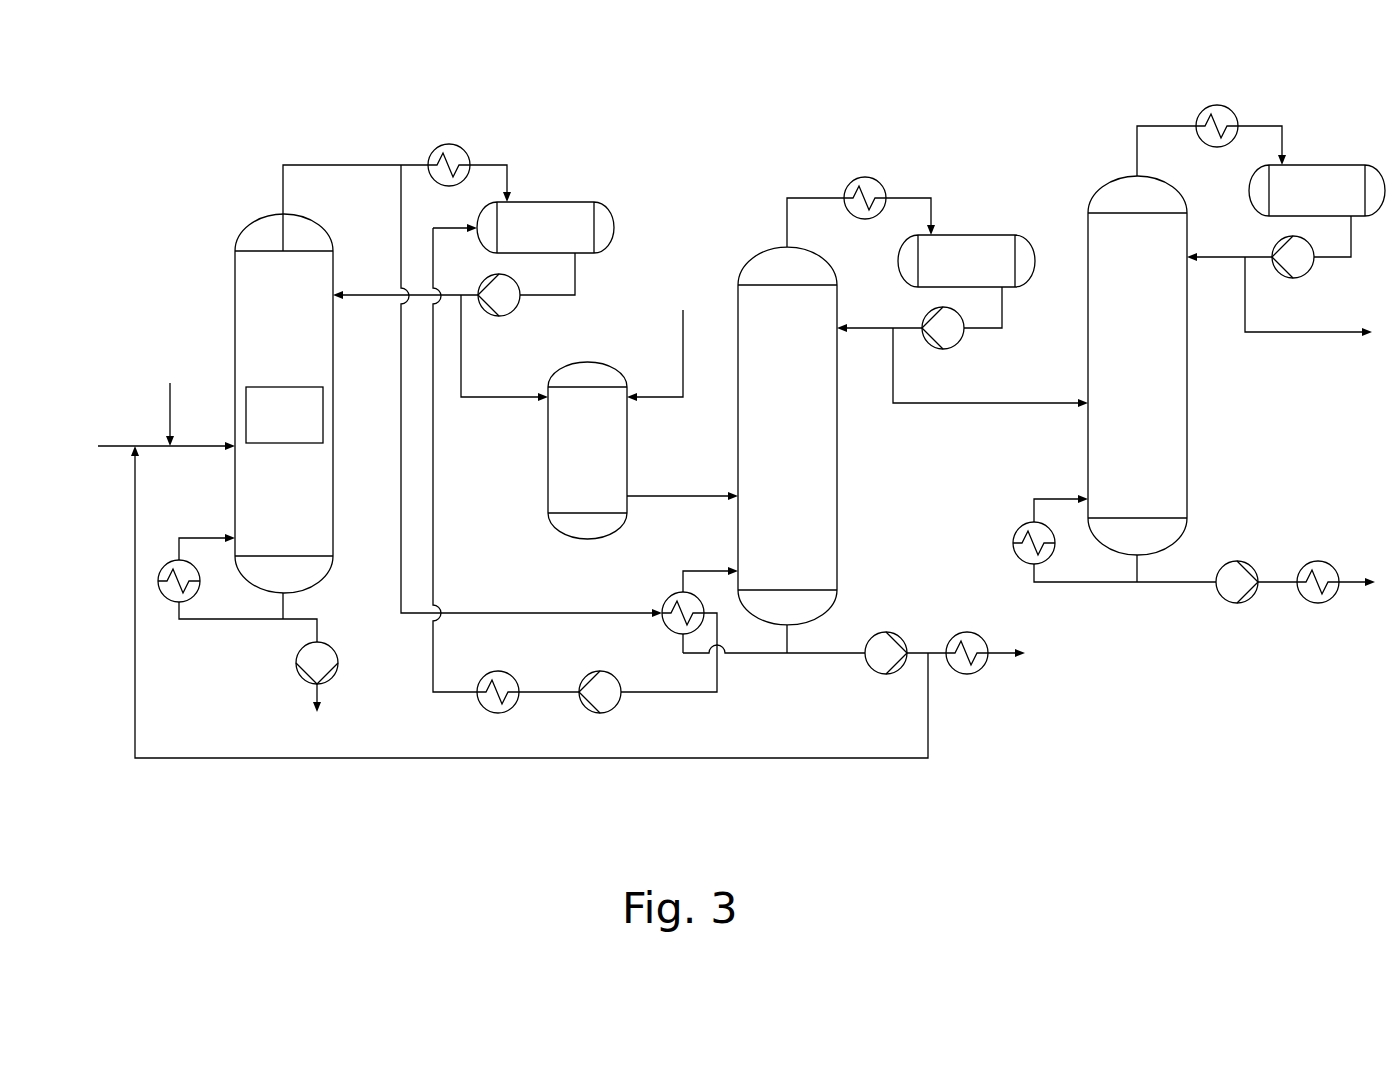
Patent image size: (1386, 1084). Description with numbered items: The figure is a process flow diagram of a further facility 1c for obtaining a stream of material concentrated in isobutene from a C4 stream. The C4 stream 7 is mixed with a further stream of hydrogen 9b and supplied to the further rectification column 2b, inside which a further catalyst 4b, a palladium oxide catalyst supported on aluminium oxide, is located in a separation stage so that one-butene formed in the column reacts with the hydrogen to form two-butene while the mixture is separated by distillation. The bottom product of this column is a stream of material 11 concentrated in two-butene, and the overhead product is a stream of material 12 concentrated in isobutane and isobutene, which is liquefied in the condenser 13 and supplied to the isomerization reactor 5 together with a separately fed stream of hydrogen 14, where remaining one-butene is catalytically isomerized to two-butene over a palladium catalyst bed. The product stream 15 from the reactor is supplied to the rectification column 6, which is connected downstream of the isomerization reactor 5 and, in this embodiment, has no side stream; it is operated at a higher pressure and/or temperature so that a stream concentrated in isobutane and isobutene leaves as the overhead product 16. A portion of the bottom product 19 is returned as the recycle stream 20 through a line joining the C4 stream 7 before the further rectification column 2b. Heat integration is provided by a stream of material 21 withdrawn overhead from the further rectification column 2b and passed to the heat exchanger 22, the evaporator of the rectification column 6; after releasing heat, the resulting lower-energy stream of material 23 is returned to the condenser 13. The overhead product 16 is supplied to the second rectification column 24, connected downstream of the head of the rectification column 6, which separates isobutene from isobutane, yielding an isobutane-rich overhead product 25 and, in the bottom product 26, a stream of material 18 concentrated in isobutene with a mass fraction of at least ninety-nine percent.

The further facility 1c is at (138, 148).
The further rectification column 2b is at (260, 307).
The further catalyst 4b is at (263, 412).
The isomerization reactor 5 is at (572, 455).
The rectification column 6 is at (809, 402).
The C4 stream 7 is at (115, 448).
The further stream of hydrogen 9b is at (167, 412).
The stream of material concentrated in 2-butene 11 is at (297, 622).
The stream of material concentrated in isobutane and isobutene 12 is at (461, 335).
The condenser 13 is at (540, 220).
The stream of hydrogen 14 is at (683, 348).
The product stream 15 is at (663, 492).
The overhead product 16 is at (975, 403).
The stream of material concentrated in isobutene 18 is at (1350, 585).
The bottom product 19 is at (833, 655).
The recycle stream 20 is at (499, 760).
The stream of material 21 is at (400, 588).
The heat exchanger 22 is at (665, 593).
The stream of material 23 is at (433, 572).
The second rectification column 24 is at (1168, 415).
The overhead product 25 is at (1325, 335).
The bottom product 26 is at (1185, 583).